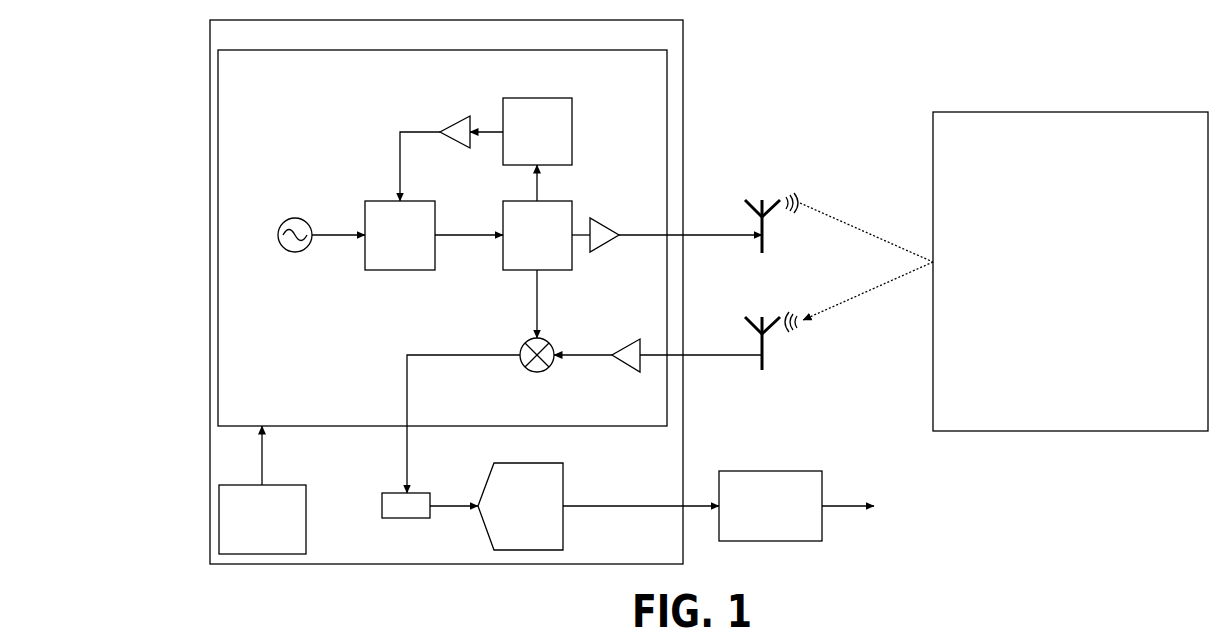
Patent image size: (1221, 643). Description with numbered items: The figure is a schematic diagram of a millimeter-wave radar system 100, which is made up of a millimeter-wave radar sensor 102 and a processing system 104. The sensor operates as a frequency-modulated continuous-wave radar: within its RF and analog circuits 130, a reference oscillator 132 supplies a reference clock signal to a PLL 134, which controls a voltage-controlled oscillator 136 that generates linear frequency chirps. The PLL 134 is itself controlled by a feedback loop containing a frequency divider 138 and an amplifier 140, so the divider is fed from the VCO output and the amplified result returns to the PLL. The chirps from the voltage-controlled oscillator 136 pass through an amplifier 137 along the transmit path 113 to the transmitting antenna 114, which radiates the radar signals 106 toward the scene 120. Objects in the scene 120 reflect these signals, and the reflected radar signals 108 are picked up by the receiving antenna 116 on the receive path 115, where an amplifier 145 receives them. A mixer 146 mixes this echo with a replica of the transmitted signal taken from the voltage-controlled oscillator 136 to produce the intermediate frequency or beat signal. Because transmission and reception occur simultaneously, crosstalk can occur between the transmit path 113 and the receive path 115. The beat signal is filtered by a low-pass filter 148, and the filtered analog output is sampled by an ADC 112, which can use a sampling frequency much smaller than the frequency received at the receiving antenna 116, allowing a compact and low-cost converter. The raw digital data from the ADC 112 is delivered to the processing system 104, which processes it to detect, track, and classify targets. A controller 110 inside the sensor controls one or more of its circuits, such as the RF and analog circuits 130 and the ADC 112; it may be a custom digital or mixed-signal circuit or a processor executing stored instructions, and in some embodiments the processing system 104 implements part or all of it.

The millimeter-wave radar system 100 is at (112, 58).
The millimeter-wave radar sensor 102 is at (687, 38).
The processing system 104 is at (810, 471).
The radar signals 106 is at (782, 190).
The reflected radar signals 108 is at (782, 305).
The controller 110 is at (302, 485).
The ADC 112 is at (502, 463).
The transmit path 113 is at (629, 211).
The transmitting antenna 114 is at (765, 248).
The receive path 115 is at (611, 381).
The receiving antenna 116 is at (765, 368).
The scene 120 is at (1024, 112).
The RF and analog circuits 130 is at (536, 50).
The reference oscillator 132 is at (293, 218).
The PLL 134 is at (425, 201).
The voltage-controlled oscillator 136 is at (563, 201).
The amplifier 137 is at (590, 253).
The frequency divider 138 is at (578, 127).
The amplifier 140 is at (447, 117).
The amplifier 145 is at (629, 340).
The mixer 146 is at (550, 343).
The low-pass filter 148 is at (418, 493).